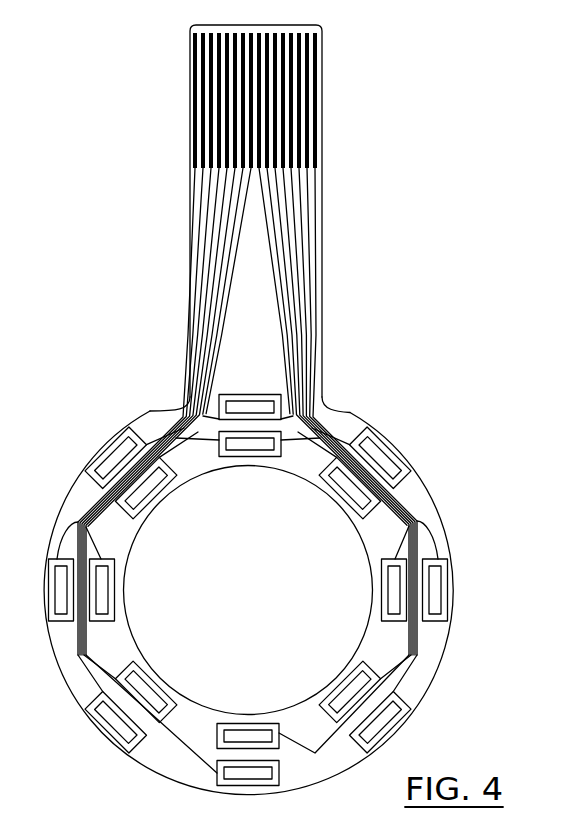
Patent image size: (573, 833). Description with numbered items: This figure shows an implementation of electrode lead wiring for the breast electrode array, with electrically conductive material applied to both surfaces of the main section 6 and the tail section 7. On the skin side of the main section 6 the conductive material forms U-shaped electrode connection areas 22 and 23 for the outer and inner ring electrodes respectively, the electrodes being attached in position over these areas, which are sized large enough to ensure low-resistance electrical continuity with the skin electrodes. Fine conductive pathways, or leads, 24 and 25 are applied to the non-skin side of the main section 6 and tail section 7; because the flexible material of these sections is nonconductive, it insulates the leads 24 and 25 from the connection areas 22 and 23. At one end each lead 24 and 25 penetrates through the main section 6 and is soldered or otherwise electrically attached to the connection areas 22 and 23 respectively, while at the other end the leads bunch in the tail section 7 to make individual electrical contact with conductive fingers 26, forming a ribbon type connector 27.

The ribbon type connector 27 is at (323, 86).
The conductive fingers 26 is at (317, 158).
The tail section 7 is at (268, 335).
The conductive pathway 25 is at (397, 538).
The conductive pathway 24 is at (432, 547).
The electrode connection area 23 is at (381, 590).
The electrode connection area 22 is at (450, 588).
The main section 6 is at (432, 643).